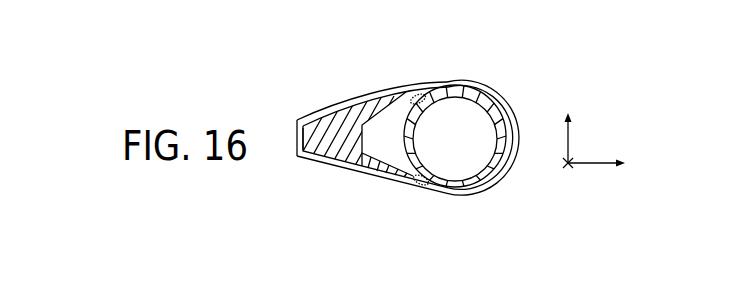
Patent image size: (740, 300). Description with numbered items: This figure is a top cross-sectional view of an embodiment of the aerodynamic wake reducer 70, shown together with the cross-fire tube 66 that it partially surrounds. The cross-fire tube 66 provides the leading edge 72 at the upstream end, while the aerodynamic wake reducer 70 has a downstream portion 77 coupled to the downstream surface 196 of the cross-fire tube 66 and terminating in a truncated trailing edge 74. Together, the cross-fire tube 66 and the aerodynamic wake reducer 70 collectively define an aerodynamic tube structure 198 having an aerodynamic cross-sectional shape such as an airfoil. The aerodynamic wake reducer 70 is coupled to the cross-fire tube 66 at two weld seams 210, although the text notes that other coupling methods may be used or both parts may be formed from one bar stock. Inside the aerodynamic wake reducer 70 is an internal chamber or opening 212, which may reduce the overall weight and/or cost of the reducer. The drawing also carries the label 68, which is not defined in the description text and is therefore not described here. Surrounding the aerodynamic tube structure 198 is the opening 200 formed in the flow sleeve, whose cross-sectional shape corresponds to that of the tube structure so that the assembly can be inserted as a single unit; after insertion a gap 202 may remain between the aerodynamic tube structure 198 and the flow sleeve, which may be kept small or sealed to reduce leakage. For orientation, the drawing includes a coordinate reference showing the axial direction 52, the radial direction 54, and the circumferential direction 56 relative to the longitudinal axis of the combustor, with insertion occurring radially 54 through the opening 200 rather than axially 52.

The aerodynamic wake reducer 70 is at (320, 98).
The aerodynamic tube structure 198 is at (443, 70).
The downstream portion 77 is at (352, 168).
The gap 202 is at (512, 110).
The opening 200 is at (450, 82).
The trailing edge 74 is at (306, 144).
The internal chamber or opening 212 is at (381, 137).
The downstream surface 196 is at (393, 172).
The conductor 68 is at (452, 137).
The cross-fire tube 66 is at (489, 104).
The leading edge 72 is at (497, 171).
The weld seams 210 is at (421, 95).
The circumferential direction or axis 56 is at (568, 143).
The axial direction or axis 52 is at (595, 169).
The radial direction or axis 54 is at (570, 168).